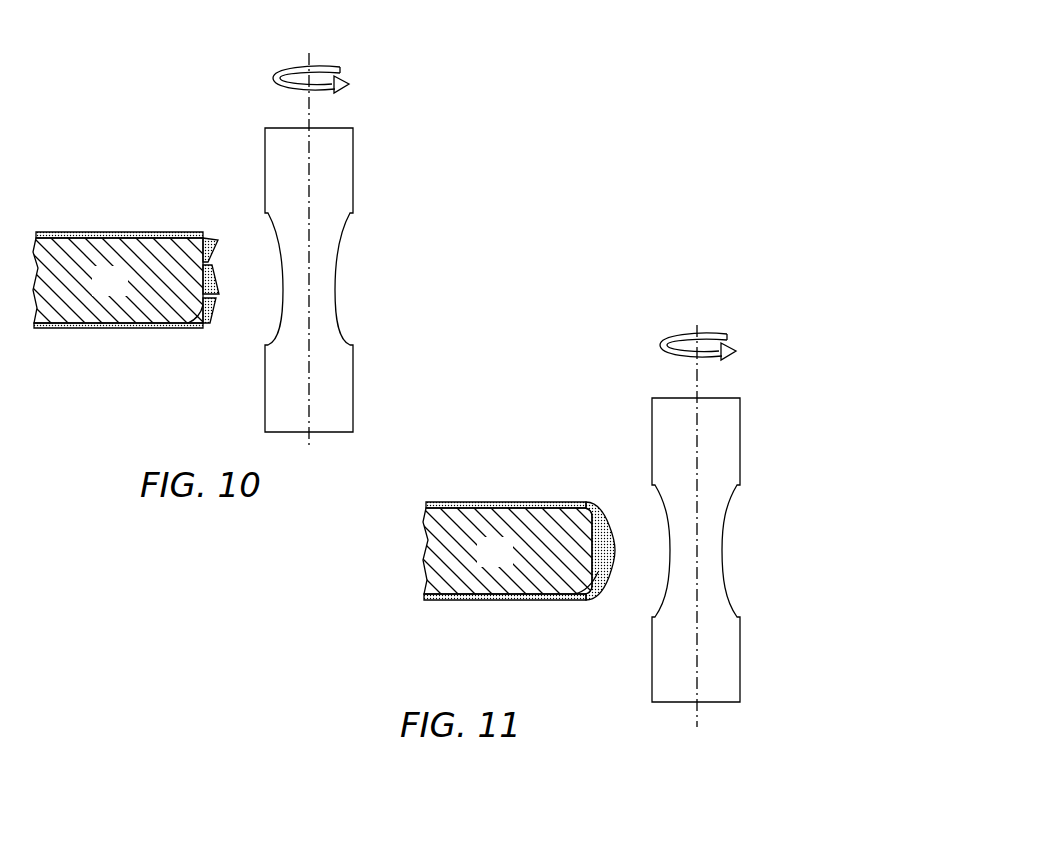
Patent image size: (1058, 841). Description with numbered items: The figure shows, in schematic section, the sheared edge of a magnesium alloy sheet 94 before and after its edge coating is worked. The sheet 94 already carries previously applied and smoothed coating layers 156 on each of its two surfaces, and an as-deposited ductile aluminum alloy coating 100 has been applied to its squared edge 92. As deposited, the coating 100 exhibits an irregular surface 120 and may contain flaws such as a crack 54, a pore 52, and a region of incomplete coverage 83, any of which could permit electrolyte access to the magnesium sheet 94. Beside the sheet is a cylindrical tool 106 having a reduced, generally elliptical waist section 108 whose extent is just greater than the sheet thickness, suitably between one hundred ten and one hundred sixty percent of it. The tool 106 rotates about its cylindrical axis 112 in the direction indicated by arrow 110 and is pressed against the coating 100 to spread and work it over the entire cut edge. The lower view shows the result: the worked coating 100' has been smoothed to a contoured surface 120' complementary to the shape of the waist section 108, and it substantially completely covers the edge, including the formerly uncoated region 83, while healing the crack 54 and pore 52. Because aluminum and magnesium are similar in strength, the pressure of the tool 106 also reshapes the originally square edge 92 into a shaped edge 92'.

In FIG. 10, the pore 52 is at (219, 300).
In FIG. 10, the crack 54 is at (212, 262).
In FIG. 10, the region of incomplete coverage 83 is at (210, 326).
In FIG. 10, the squared edge 92 is at (170, 343).
In FIG. 11, the shaped edge 92' is at (563, 611).
In FIG. 10, the sheet 94 is at (122, 293).
In FIG. 11, the sheet 94 is at (507, 564).
In FIG. 10, the aluminum alloy coating 100 is at (193, 202).
In FIG. 11, the worked coating 100' is at (600, 637).
In FIG. 10, the tool 106 is at (263, 141).
In FIG. 11, the tool 106 is at (648, 411).
In FIG. 10, the waist section 108 is at (336, 278).
In FIG. 11, the waist section 108 is at (723, 553).
In FIG. 10, the arrow 110 is at (322, 81).
In FIG. 11, the arrow 110 is at (709, 348).
In FIG. 10, the cylindrical axis 112 is at (312, 106).
In FIG. 11, the cylindrical axis 112 is at (700, 375).
In FIG. 10, the irregular surface 120 is at (252, 312).
In FIG. 11, the contoured surface 120' is at (600, 514).
In FIG. 10, the coating layers 156 is at (118, 232).
In FIG. 11, the coating layers 156 is at (505, 502).